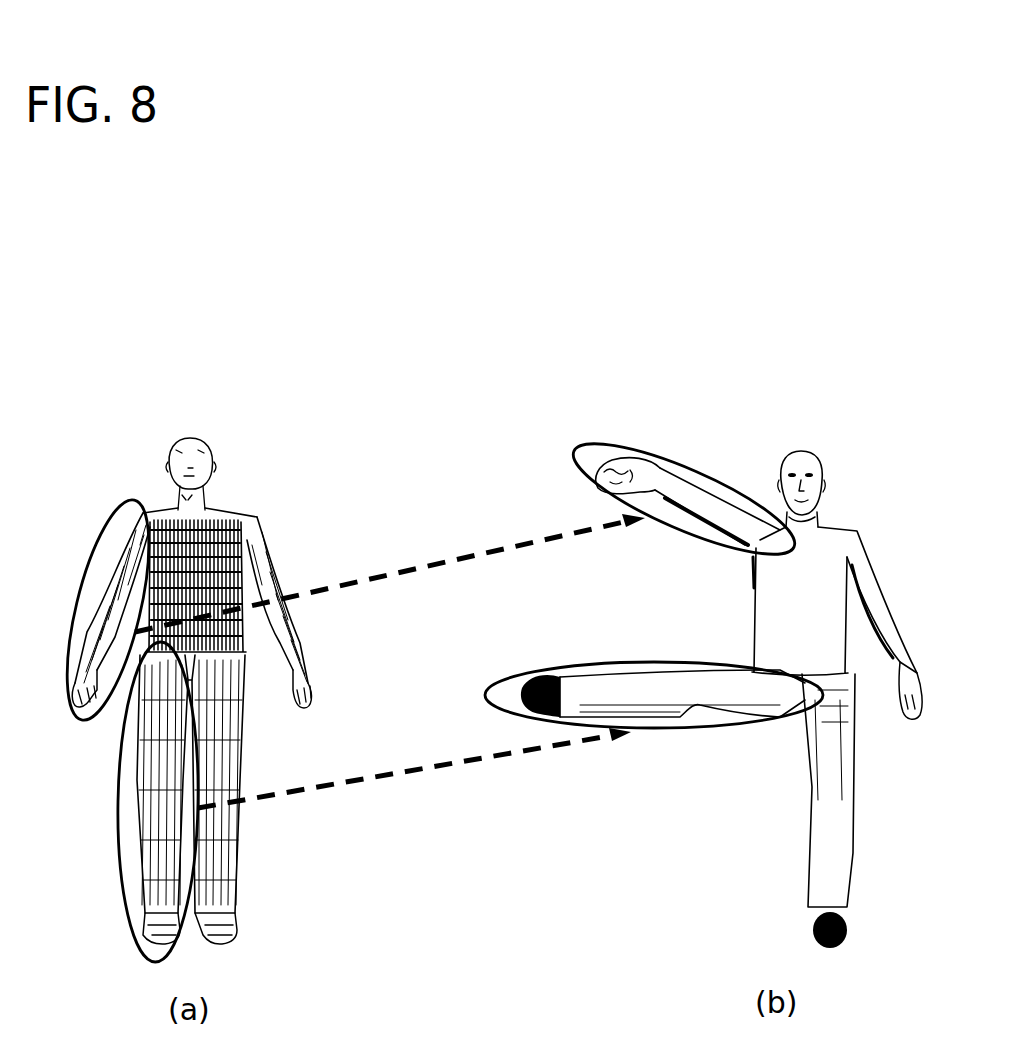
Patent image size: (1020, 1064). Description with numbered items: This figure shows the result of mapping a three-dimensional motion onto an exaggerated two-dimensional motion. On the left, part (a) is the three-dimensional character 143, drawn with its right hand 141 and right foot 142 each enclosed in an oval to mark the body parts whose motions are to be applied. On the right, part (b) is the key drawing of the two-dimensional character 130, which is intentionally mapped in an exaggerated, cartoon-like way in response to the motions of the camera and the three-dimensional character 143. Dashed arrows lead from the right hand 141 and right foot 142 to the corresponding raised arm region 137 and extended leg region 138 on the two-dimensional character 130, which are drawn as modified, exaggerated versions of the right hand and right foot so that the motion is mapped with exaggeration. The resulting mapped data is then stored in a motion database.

The 2D character 130 is at (680, 686).
The arm of the character 137 is at (580, 462).
The leg of the character 138 is at (497, 700).
The right hand 141 is at (97, 562).
The right foot 142 is at (119, 824).
The 3D character 143 is at (243, 524).